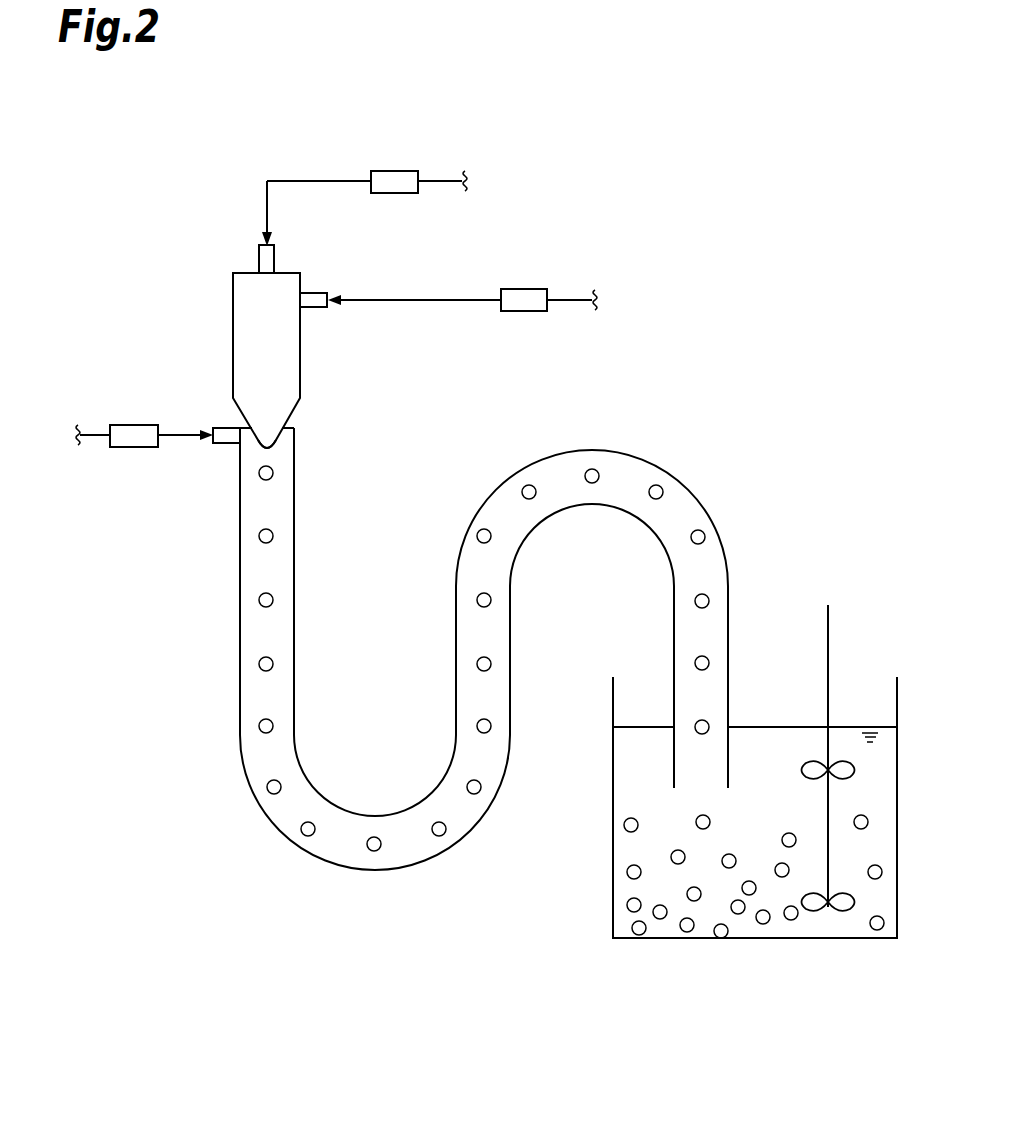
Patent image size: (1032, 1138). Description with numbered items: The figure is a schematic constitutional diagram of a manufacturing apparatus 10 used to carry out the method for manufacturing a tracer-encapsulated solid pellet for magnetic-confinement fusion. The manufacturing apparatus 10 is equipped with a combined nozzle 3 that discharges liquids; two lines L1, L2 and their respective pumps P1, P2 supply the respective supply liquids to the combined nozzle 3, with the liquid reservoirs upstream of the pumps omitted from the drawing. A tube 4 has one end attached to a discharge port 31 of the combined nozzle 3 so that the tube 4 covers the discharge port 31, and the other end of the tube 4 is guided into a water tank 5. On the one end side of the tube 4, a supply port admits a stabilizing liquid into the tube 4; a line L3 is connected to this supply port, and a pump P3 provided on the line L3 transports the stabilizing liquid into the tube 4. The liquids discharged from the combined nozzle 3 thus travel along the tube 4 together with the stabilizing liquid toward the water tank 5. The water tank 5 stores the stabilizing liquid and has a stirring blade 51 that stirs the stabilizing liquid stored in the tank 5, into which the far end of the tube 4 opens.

The manufacturing apparatus 10 is at (656, 142).
The combined nozzle 3 is at (265, 313).
The discharge port 31 is at (268, 452).
The tube 4 is at (240, 641).
The water tank 5 is at (613, 890).
The stirring blade 51 is at (829, 623).
The line L1 is at (312, 181).
The line L2 is at (418, 299).
The line L3 is at (185, 437).
The pump P1 is at (394, 171).
The pump P2 is at (526, 289).
The pump P3 is at (126, 447).